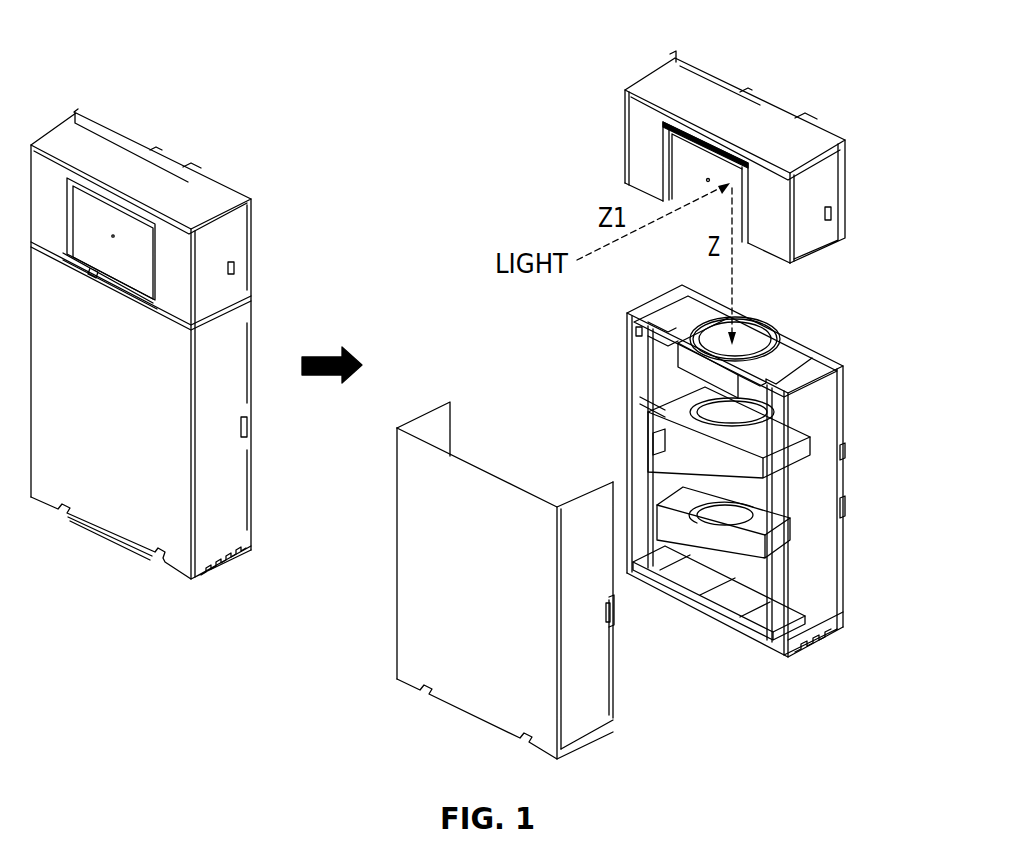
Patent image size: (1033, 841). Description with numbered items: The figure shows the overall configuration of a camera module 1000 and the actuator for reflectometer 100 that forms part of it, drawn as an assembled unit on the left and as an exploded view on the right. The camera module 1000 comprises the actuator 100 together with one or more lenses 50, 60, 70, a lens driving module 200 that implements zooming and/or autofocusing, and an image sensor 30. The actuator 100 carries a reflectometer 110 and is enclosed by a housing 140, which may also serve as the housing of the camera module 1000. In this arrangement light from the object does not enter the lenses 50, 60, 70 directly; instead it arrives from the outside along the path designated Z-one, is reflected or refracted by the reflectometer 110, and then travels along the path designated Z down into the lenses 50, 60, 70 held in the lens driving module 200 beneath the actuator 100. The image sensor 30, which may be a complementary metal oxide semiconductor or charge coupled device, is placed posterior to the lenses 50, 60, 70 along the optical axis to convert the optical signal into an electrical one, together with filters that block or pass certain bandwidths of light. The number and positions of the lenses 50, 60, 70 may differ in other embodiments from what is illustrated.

The camera module 1000 is at (176, 131).
The actuator for reflectometer 100 is at (747, 143).
The reflectometer 110 is at (682, 160).
The housing 140 is at (838, 192).
The lens driving module 200 is at (664, 509).
The lens 50 is at (703, 342).
The lens 60 is at (717, 418).
The lens 70 is at (715, 522).
The image sensor 30 is at (735, 598).